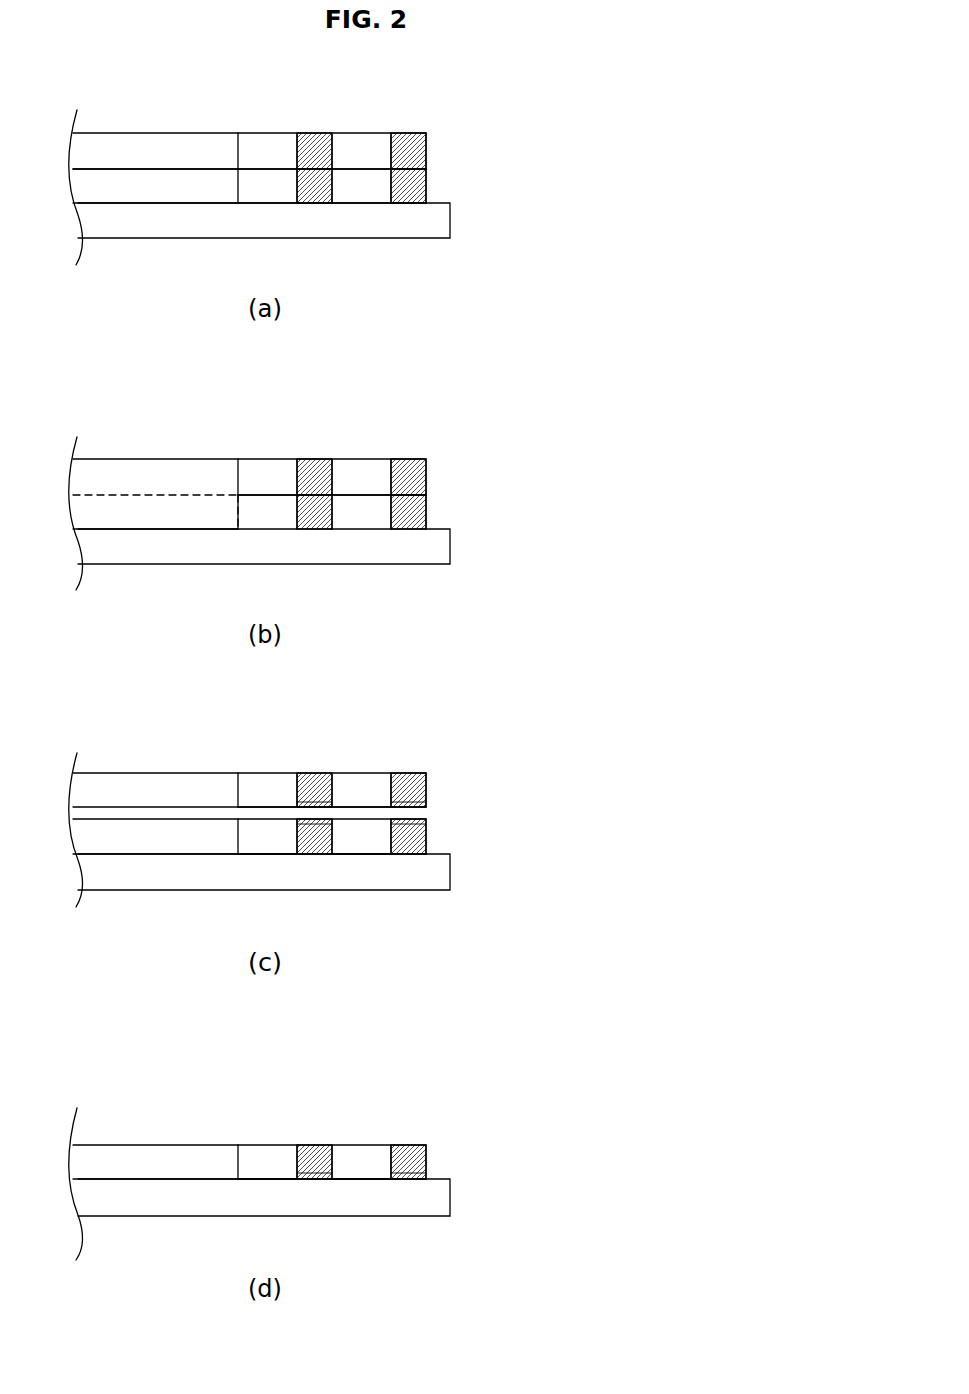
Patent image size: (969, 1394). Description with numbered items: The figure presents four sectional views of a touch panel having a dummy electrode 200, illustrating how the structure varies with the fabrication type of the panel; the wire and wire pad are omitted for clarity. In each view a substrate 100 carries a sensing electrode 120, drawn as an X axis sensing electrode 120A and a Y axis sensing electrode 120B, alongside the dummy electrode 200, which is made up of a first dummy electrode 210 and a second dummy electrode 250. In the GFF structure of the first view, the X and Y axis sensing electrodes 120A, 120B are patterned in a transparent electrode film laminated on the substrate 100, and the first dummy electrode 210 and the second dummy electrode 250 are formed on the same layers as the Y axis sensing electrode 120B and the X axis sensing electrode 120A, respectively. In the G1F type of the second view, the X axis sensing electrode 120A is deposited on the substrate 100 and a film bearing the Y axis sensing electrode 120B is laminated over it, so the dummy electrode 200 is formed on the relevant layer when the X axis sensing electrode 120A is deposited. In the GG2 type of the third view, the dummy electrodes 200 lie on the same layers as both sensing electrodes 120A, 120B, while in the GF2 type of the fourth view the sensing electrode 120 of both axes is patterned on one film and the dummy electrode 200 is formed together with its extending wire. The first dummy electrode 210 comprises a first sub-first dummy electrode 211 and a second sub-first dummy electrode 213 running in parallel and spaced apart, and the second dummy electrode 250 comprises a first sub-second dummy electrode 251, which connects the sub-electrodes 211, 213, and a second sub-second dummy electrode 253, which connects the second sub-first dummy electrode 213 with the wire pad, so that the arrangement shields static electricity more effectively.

The substrate 100 is at (190, 233).
The sensing electrode 120 is at (178, 1152).
The X axis sensing electrode 120A is at (108, 177).
The Y axis sensing electrode 120B is at (178, 137).
The dummy electrode 200 is at (452, 643).
The first dummy electrode 210 is at (422, 643).
The first sub-first dummy electrode 211 is at (315, 140).
The second sub-first dummy electrode 213 is at (420, 151).
The second dummy electrode 250 is at (422, 674).
The first sub-second dummy electrode 251 is at (267, 201).
The second sub-second dummy electrode 253 is at (360, 197).